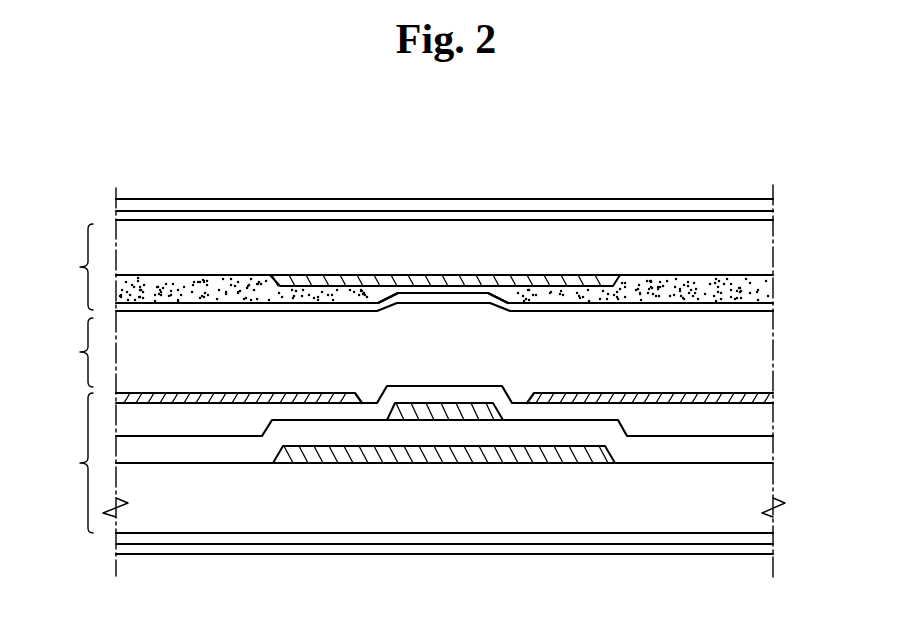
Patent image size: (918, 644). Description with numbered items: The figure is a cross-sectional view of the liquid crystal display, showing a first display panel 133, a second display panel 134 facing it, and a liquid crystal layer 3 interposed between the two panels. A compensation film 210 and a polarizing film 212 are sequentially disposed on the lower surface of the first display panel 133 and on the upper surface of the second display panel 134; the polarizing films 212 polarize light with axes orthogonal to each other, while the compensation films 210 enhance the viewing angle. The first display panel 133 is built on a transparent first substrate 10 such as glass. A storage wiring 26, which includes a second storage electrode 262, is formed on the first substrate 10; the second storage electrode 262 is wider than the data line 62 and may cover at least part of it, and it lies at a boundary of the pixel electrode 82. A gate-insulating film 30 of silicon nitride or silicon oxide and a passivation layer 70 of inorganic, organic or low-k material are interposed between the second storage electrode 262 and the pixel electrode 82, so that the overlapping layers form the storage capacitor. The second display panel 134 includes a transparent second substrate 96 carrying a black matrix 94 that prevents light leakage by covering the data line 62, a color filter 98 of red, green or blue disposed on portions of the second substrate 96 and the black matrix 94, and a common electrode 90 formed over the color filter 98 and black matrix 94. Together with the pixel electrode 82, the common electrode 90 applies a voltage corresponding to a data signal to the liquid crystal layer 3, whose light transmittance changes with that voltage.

The first substrate 10 is at (760, 477).
The gate-insulating film 30 is at (561, 532).
The storage wiring 26 is at (446, 534).
The second storage electrode 262 is at (540, 455).
The data line 62 is at (418, 413).
The passivation layer 70 is at (760, 422).
The pixel electrode 82 is at (760, 398).
The common electrode 90 is at (483, 225).
The black matrix 94 is at (478, 285).
The second substrate 96 is at (398, 237).
The color filter 98 is at (168, 287).
The compensation film 210 is at (245, 212).
The polarizing film 212 is at (312, 200).
The second display panel 134 is at (63, 267).
The liquid crystal layer 3 is at (75, 352).
The first display panel 133 is at (63, 463).